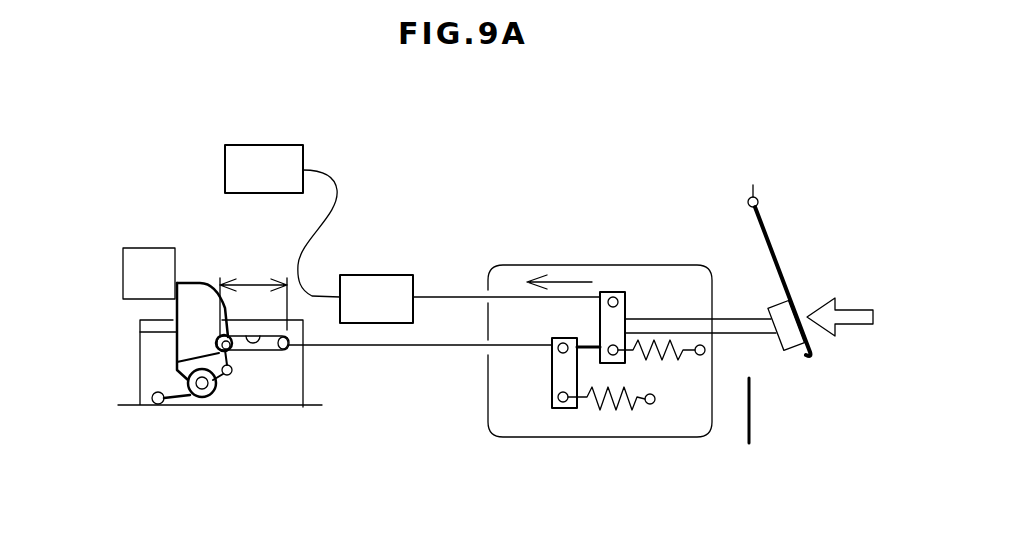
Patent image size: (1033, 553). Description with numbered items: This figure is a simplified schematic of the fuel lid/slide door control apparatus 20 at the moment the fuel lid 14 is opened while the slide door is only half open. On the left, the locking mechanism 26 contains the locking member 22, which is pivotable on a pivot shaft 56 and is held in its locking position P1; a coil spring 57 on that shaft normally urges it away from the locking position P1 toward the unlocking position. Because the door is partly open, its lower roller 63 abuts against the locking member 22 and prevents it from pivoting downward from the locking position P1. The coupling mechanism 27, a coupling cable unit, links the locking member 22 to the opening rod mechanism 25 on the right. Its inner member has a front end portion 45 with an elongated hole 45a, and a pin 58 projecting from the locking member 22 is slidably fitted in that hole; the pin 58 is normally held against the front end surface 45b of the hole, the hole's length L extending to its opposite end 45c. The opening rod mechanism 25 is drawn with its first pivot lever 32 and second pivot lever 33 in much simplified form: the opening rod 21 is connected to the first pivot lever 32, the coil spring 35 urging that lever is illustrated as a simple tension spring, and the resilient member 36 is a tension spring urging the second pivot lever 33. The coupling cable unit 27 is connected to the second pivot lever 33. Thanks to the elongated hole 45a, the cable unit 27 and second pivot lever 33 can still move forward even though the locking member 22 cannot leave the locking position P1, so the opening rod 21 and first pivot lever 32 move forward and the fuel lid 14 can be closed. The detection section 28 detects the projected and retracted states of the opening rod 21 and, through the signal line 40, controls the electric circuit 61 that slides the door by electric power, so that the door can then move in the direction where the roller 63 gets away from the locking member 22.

The fuel lid 14 is at (780, 268).
The fuel lid/slide door control apparatus 20 is at (663, 100).
The opening rod 21 is at (740, 318).
The locking member 22 is at (193, 283).
The opening rod mechanism 25 is at (545, 236).
The locking mechanism 26 is at (124, 334).
The coupling mechanism 27 is at (452, 346).
The detection section 28 is at (377, 275).
The first pivot lever 32 is at (613, 292).
The second pivot lever 33 is at (548, 380).
The coil spring 35 is at (676, 338).
The resilient member 36 is at (620, 410).
The signal line 40 is at (452, 296).
The front end portion 45 is at (288, 352).
The elongated hole 45a is at (258, 336).
The front end surface 45b is at (176, 361).
The end portion 45c is at (287, 346).
The pivot shaft 56 is at (202, 397).
The coil spring 57 is at (173, 405).
The pin 58 is at (243, 380).
The electric circuit 61 is at (267, 145).
The lower roller 63 is at (143, 258).
The locking position P1 is at (197, 283).
The stroke length L is at (245, 288).